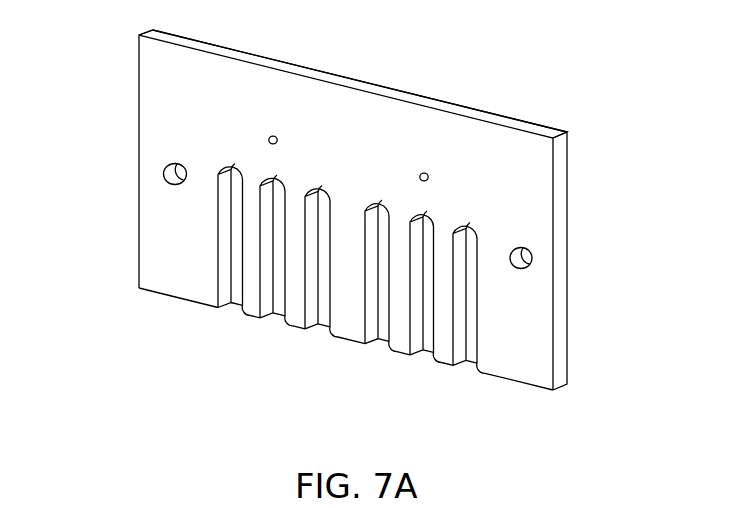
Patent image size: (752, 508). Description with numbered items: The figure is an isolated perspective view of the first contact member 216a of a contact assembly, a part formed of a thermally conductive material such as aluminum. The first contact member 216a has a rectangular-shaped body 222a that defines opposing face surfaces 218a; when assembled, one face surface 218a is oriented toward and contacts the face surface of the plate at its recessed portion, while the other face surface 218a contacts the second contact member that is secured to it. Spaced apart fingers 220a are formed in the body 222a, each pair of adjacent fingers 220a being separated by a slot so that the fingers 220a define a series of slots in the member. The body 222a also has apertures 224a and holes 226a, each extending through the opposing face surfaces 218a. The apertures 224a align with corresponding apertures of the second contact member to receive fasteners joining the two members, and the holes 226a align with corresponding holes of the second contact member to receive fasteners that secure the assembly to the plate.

The first contact member 216a is at (367, 222).
The face surfaces 218a is at (352, 109).
The fingers 220a is at (443, 357).
The body 222a is at (185, 82).
The apertures 224a is at (414, 177).
The holes 226a is at (170, 177).